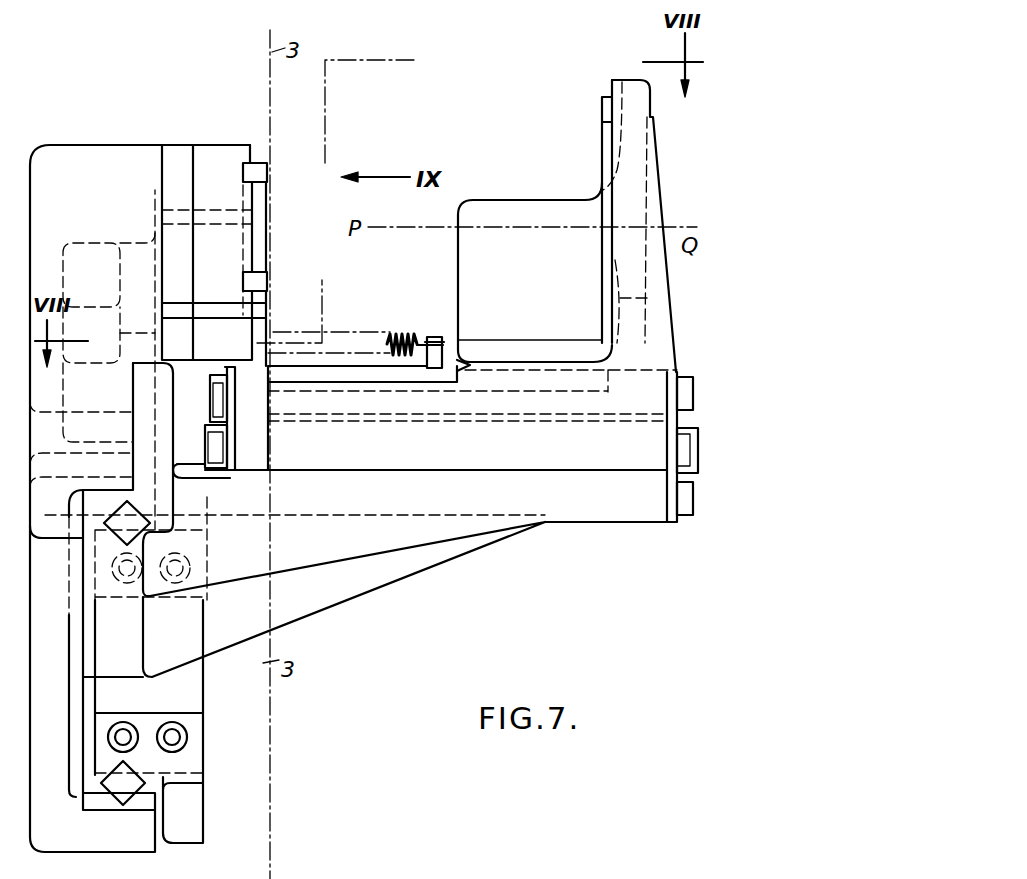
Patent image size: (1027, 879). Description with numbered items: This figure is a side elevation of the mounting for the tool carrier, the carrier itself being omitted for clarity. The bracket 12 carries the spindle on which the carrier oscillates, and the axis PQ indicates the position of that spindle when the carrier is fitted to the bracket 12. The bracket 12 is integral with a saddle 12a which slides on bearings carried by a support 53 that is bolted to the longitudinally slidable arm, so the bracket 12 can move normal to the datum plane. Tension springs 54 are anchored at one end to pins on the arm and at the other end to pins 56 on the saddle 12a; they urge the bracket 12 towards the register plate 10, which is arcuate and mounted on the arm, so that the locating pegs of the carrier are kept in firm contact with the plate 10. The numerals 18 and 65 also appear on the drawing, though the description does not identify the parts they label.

The body housing 18 is at (113, 150).
The register plate 10 is at (268, 213).
The tension spring 54 is at (333, 334).
The pin 56 is at (432, 337).
The block 65 is at (542, 301).
The bracket 12 is at (657, 297).
The saddle 12a is at (618, 467).
The support 53 is at (545, 522).